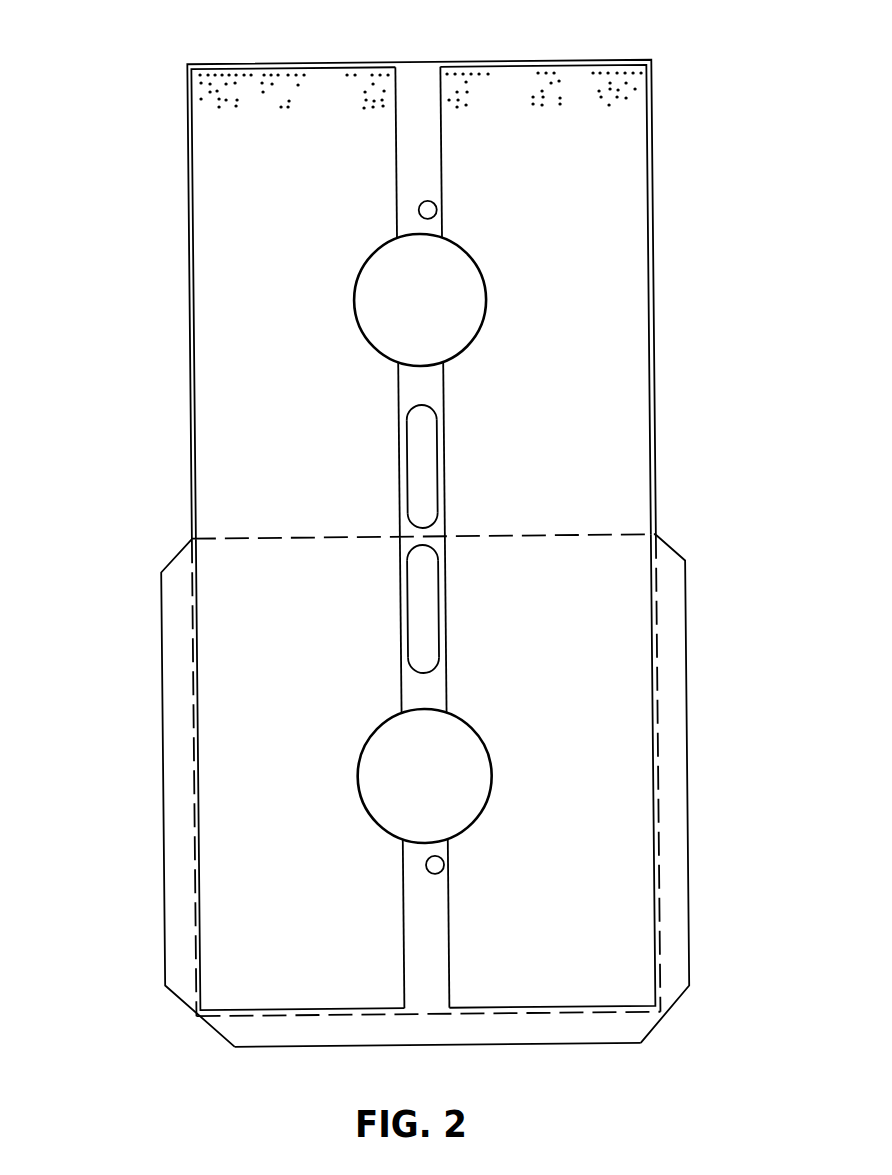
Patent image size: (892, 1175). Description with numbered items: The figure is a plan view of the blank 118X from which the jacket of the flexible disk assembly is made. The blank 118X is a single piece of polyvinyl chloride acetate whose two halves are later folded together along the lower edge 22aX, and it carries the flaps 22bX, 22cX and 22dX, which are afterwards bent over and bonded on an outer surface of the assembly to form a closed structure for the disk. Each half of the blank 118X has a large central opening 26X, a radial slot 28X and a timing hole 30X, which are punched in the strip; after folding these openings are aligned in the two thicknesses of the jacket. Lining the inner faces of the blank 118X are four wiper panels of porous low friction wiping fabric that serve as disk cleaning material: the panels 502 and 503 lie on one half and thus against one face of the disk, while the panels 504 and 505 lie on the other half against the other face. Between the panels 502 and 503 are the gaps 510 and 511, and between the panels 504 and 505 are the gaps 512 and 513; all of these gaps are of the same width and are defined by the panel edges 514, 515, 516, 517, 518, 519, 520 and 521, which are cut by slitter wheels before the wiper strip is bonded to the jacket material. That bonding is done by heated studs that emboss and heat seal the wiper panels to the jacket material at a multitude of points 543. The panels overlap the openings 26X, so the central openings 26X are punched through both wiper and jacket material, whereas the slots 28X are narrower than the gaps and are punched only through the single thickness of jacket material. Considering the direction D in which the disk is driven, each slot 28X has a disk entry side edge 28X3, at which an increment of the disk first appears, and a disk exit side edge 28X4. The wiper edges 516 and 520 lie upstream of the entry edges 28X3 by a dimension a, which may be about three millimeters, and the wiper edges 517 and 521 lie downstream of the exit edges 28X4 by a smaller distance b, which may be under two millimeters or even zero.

The blank 118X is at (649, 285).
The lower edge 22aX is at (614, 532).
The flap 22bX is at (175, 683).
The flap 22cX is at (592, 1045).
The flap 22dX is at (676, 674).
The central opening 26X is at (357, 283).
The radial slot 28X is at (407, 422).
The disk entry side edge 28X3 is at (440, 457).
The disk exit side edge 28X4 is at (405, 457).
The timing hole 30X is at (419, 210).
The wiper panel 502 is at (318, 945).
The wiper panel 503 is at (570, 941).
The wiper panel 504 is at (303, 393).
The wiper panel 505 is at (573, 391).
The gap 510 is at (438, 938).
The gap 511 is at (432, 684).
The gap 512 is at (433, 107).
The gap 513 is at (432, 394).
The panel edge 514 is at (451, 971).
The panel edge 515 is at (402, 974).
The panel edge 516 is at (448, 693).
The panel edge 517 is at (397, 694).
The panel edge 518 is at (447, 135).
The panel edge 519 is at (397, 135).
The panel edge 520 is at (447, 387).
The panel edge 521 is at (397, 392).
The sealing points 543 is at (547, 63).
The dimension a is at (415, 583).
The distance b is at (411, 493).
The direction of rotation D is at (480, 182).